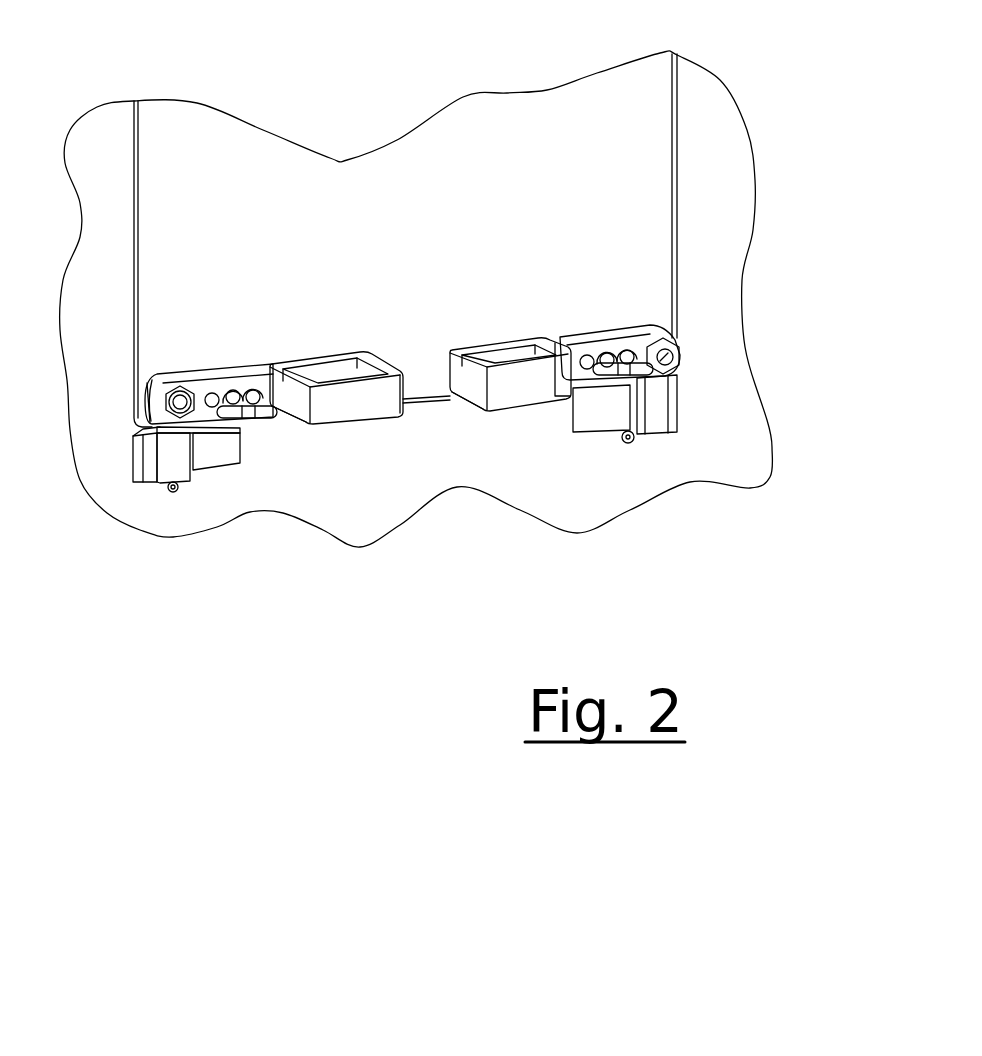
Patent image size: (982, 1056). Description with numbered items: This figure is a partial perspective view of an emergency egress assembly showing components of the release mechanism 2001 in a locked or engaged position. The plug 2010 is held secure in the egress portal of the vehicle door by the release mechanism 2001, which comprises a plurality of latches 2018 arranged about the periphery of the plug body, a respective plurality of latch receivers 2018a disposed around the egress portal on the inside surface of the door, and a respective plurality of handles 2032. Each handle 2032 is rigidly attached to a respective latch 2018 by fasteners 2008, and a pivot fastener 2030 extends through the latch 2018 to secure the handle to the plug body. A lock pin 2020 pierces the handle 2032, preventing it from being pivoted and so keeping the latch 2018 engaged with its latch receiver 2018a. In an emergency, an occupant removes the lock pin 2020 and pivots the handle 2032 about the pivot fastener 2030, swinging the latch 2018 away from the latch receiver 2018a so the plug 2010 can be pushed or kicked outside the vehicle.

The plug 2010 is at (355, 113).
The release mechanism 2001 is at (603, 312).
The fasteners 2008 is at (212, 397).
The lock pin 2020 is at (265, 417).
The handle 2032 is at (370, 402).
The pivot fastener 2030 is at (680, 366).
The latch 2018 is at (173, 462).
The latch receiver 2018a is at (215, 455).